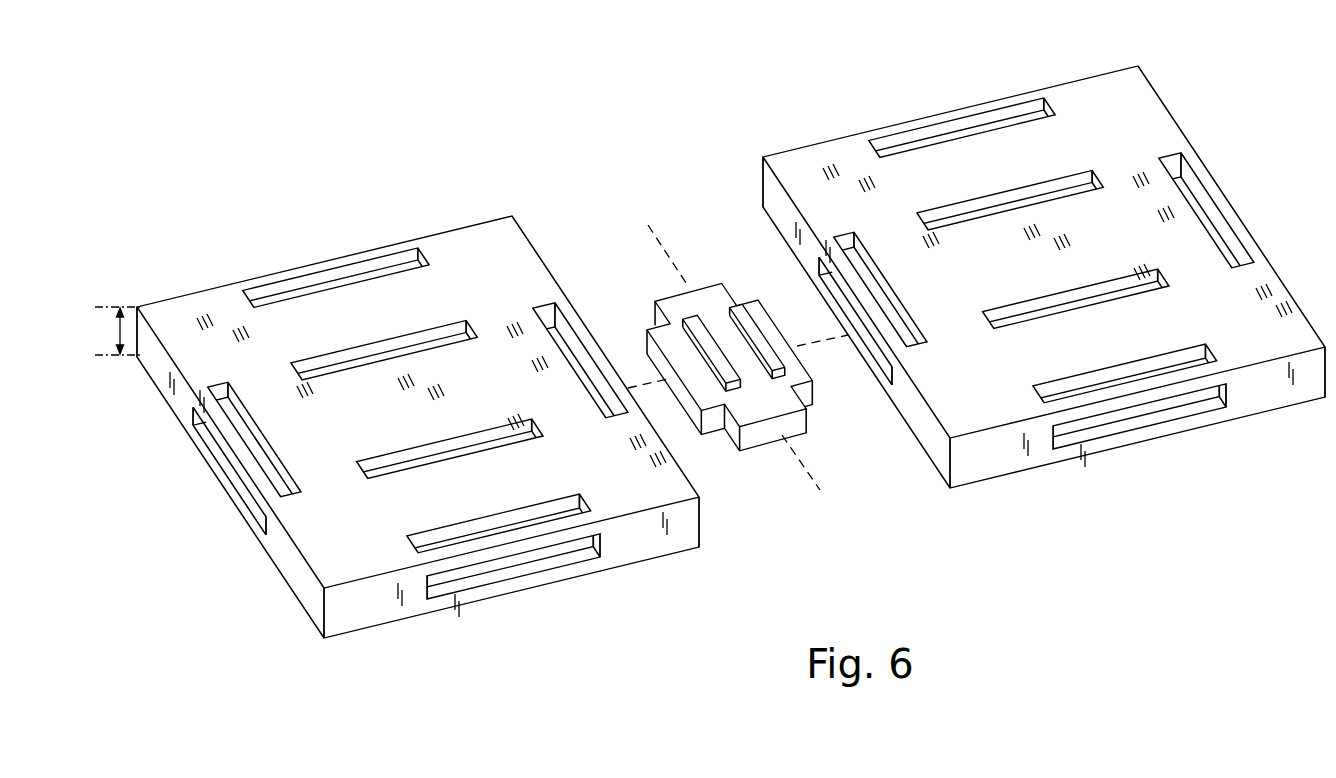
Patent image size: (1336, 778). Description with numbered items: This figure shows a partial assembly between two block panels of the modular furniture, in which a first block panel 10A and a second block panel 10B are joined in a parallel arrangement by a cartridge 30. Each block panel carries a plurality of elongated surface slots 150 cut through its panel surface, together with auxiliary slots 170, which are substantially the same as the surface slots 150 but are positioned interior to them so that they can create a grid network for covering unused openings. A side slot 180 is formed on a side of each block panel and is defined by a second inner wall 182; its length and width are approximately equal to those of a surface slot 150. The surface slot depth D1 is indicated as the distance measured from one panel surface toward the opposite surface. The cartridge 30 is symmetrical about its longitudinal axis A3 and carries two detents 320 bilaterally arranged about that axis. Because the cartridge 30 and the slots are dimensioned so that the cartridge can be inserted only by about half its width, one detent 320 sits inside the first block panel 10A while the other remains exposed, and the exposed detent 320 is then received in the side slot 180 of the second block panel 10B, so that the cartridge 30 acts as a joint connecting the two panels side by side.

The first block panel 10A is at (518, 253).
The second block panel 10B is at (1145, 100).
The cartridge 30 is at (700, 287).
The detent 320 is at (728, 305).
The surface slot 150 is at (572, 347).
The auxiliary slot 170 is at (447, 338).
The side slot 180 is at (275, 472).
The second inner wall 182 is at (832, 291).
The longitudinal axis A3 is at (833, 481).
The surface slot depth D1 is at (101, 327).